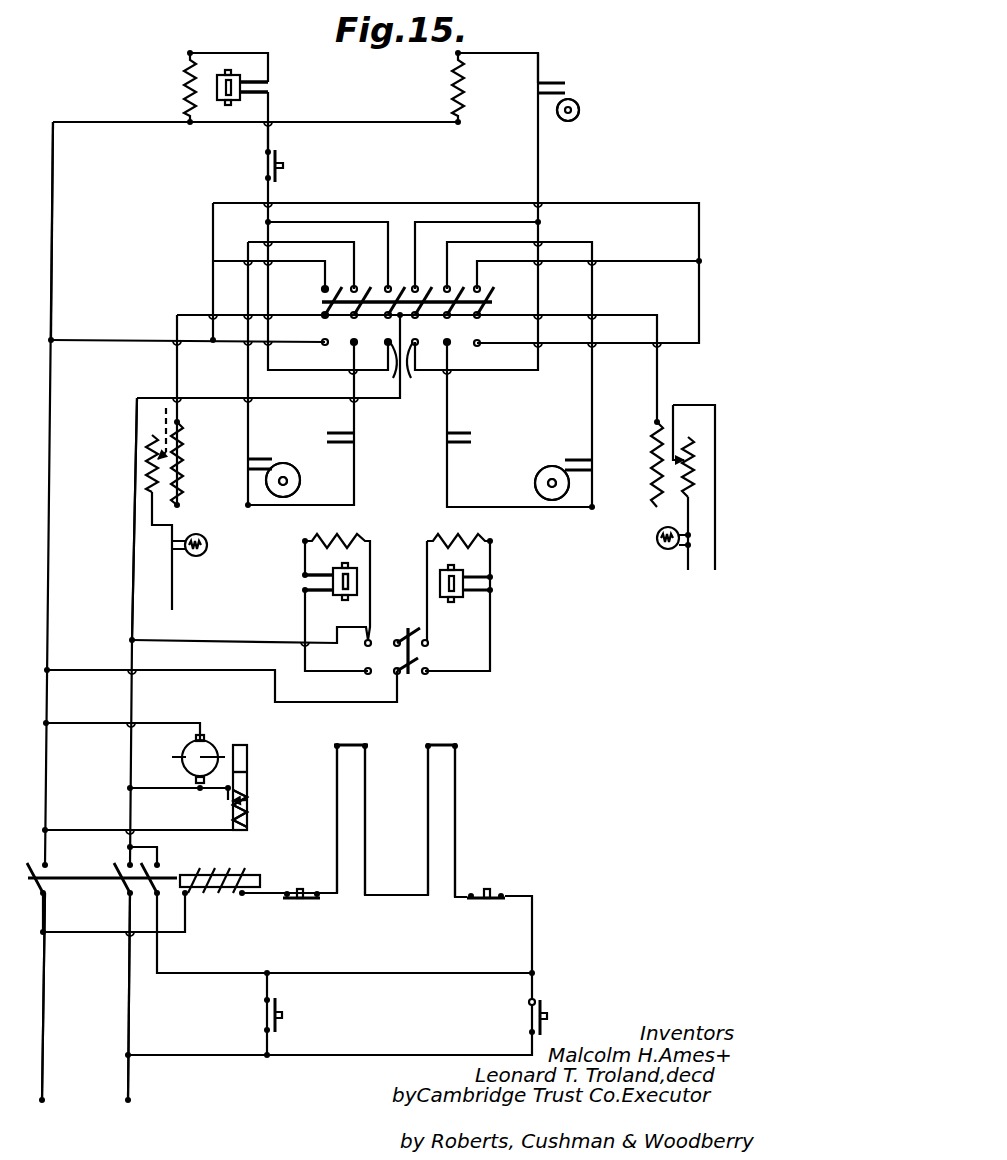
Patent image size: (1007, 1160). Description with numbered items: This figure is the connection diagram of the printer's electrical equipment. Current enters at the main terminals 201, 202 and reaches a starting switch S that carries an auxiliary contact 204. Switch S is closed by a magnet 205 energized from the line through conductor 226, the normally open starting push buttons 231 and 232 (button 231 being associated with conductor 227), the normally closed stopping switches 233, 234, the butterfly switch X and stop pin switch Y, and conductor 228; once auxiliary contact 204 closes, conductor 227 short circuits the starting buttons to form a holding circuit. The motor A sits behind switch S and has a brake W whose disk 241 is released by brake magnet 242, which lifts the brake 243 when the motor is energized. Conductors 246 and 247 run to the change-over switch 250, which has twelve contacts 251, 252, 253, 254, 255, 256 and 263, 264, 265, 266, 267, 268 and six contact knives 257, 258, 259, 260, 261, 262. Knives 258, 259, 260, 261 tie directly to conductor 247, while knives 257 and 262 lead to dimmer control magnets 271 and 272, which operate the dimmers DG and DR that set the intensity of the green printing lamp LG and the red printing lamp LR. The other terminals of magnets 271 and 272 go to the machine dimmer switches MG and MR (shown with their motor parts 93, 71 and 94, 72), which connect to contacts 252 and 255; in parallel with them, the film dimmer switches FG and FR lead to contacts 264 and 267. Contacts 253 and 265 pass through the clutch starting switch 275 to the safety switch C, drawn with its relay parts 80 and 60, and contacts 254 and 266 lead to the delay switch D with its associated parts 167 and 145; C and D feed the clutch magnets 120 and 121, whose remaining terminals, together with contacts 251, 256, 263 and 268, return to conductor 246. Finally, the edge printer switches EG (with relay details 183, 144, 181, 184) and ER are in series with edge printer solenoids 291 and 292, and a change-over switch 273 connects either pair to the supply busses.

The relay frame 80 is at (218, 84).
The relay coil 60 is at (231, 72).
The auxiliary contact 204 is at (244, 82).
The magnet 205 is at (246, 92).
The safety switch C is at (274, 87).
The clutch magnet 121 is at (188, 88).
The clutch magnet 120 is at (456, 88).
The delay switch D is at (575, 84).
The motor 167 is at (580, 110).
The motor shaft 145 is at (568, 122).
The clutch starting switch 275 is at (278, 179).
The change-over switch 250 is at (503, 304).
The contact 251 is at (322, 289).
The contact 252 is at (349, 292).
The contact 253 is at (381, 292).
The contact 254 is at (410, 292).
The contact 255 is at (441, 292).
The contact 256 is at (471, 292).
The contact knife 257 is at (324, 320).
The contact knife 258 is at (354, 325).
The contact knife 259 is at (387, 325).
The contact knife 260 is at (426, 325).
The contact knife 261 is at (462, 325).
The contact knife 262 is at (499, 325).
The contact 263 is at (324, 346).
The contact 264 is at (370, 351).
The contact 265 is at (392, 378).
The contact 266 is at (428, 366).
The contact 267 is at (433, 351).
The contact 268 is at (480, 346).
The conductor 246 is at (52, 371).
The conductor 247 is at (137, 419).
The dimmer DG is at (150, 479).
The dimmer control magnet 271 is at (181, 468).
The machine dimmer switch MG is at (288, 468).
The motor 93 is at (299, 478).
The shaft 71 is at (296, 490).
The film dimmer switch FG is at (362, 437).
The film dimmer switch FR is at (445, 444).
The printing lamp LG is at (197, 557).
The machine dimmer switch MR is at (548, 464).
The motor 94 is at (545, 483).
The shaft 72 is at (546, 488).
The dimmer control magnet 272 is at (652, 464).
The dimmer DR is at (686, 490).
The printing lamp LR is at (665, 550).
The edge printer solenoid 291 is at (334, 534).
The edge printer switch EG is at (303, 578).
The contact 183 is at (324, 562).
The relay coil 144 is at (353, 568).
The relay 181 is at (358, 590).
The contact 184 is at (323, 594).
The edge printer solenoid 292 is at (460, 540).
The edge printer switch ER is at (496, 586).
The change-over switch 273 is at (383, 665).
The motor A is at (232, 746).
The brake W is at (265, 807).
The disk 241 is at (248, 753).
The brake 243 is at (248, 782).
The brake magnet 242 is at (248, 826).
The starting switch S is at (98, 870).
The stopping switch 233 is at (317, 902).
The butterfly switch X is at (362, 726).
The stop pin switch Y is at (458, 741).
The stopping switch 234 is at (488, 895).
The conductor 227 is at (378, 972).
The conductor 228 is at (118, 934).
The starting push button 231 is at (280, 1018).
The starting push button 232 is at (545, 1008).
The conductor 226 is at (352, 1060).
The main terminal 201 is at (42, 1100).
The main terminal 202 is at (128, 1100).